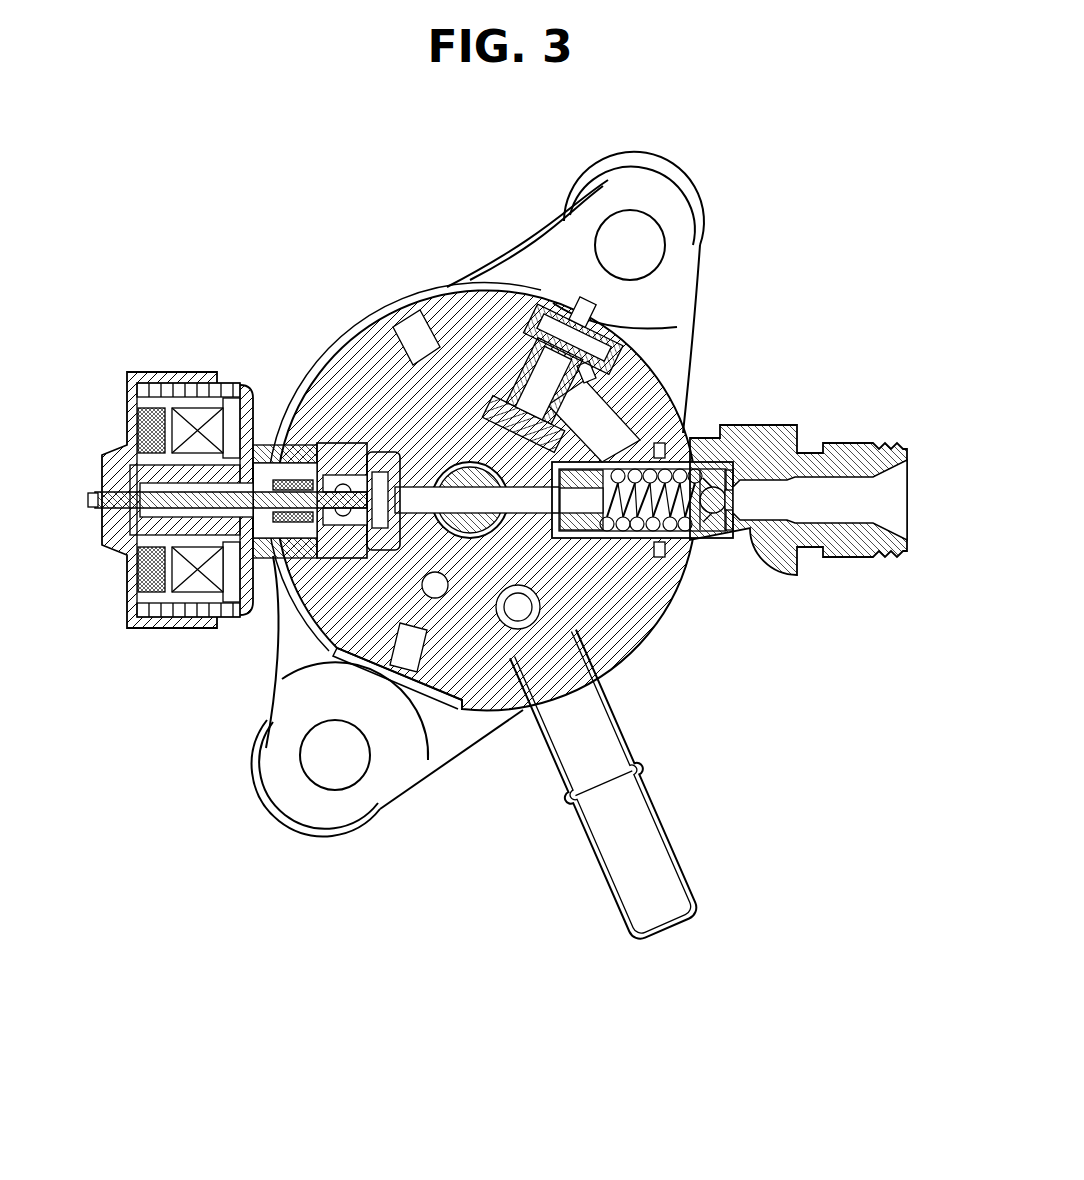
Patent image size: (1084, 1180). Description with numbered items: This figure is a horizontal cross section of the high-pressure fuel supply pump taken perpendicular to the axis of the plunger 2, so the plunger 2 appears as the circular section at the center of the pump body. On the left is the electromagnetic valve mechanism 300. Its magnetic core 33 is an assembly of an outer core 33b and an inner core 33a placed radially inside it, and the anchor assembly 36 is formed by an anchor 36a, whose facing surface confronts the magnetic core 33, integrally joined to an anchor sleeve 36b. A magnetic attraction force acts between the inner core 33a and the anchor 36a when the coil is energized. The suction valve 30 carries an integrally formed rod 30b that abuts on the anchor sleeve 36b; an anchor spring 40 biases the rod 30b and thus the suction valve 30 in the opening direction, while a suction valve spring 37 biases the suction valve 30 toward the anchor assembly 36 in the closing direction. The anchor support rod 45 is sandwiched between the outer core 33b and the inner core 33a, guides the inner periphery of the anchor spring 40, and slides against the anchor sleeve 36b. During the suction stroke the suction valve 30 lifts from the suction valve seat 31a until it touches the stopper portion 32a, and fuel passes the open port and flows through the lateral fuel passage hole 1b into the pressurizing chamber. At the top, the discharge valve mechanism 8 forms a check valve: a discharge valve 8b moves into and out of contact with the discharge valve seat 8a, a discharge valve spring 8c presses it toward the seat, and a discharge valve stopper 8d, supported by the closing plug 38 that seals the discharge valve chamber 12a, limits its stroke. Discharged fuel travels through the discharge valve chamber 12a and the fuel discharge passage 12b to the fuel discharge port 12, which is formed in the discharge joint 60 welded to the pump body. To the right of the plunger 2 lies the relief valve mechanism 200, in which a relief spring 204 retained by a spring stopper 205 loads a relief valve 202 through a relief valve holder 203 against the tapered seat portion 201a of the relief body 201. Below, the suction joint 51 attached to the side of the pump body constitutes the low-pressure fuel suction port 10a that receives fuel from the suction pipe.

The plunger 2 is at (470, 515).
The fuel passage hole 1b is at (430, 509).
The discharge valve mechanism 8 is at (492, 316).
The discharge valve seat 8a is at (495, 400).
The discharge valve 8b is at (507, 375).
The discharge valve spring 8c is at (515, 350).
The discharge valve stopper 8d is at (530, 345).
The low-pressure fuel suction port 10a is at (660, 912).
The fuel discharge port 12 is at (826, 523).
The discharge valve chamber 12a is at (565, 407).
The fuel discharge passage 12b is at (610, 420).
The suction valve 30 is at (297, 470).
The rod 30b is at (330, 498).
The suction valve seat 31a is at (367, 525).
The stopper portion 32a is at (328, 562).
The magnetic core 33 is at (131, 476).
The inner core 33a is at (158, 465).
The outer core 33b is at (122, 475).
The anchor assembly 36 is at (254, 394).
The anchor 36a is at (227, 473).
The anchor sleeve 36b is at (252, 483).
The suction valve spring 37 is at (283, 495).
The closing plug 38 is at (582, 350).
The anchor spring 40 is at (157, 520).
The anchor support rod 45 is at (200, 510).
The suction joint 51 is at (630, 826).
The discharge joint 60 is at (868, 562).
The relief valve mechanism 200 is at (693, 545).
The relief body 201 is at (745, 540).
The seat portion 201a is at (724, 492).
The relief valve 202 is at (735, 535).
The relief valve holder 203 is at (708, 520).
The relief spring 204 is at (660, 530).
The spring stopper 205 is at (600, 528).
The electromagnetic valve mechanism 300 is at (203, 490).